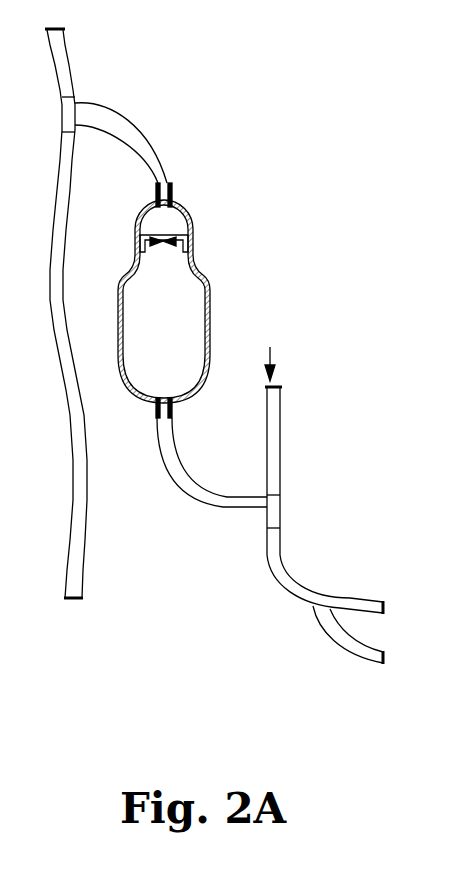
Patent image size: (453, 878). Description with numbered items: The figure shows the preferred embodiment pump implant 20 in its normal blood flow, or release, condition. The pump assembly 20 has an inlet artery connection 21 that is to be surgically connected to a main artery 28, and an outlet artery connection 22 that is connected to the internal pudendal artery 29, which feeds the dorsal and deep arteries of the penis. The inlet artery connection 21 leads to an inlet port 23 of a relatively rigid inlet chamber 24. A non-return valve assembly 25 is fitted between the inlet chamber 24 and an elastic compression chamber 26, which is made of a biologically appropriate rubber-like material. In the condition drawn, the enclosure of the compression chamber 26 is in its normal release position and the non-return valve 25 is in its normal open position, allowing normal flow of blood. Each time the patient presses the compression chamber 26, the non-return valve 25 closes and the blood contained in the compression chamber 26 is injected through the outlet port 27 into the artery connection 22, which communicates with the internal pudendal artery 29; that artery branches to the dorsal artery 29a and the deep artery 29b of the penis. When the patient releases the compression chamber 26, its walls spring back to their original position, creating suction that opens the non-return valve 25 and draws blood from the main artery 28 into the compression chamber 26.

The pump implant 20 is at (77, 670).
The inlet artery connection 21 is at (167, 157).
The outlet artery connection 22 is at (198, 482).
The inlet port 23 is at (174, 193).
The inlet chamber 24 is at (165, 238).
The non-return valve 25 is at (186, 246).
The compression chamber 26 is at (210, 293).
The outlet port 27 is at (173, 428).
The main artery 28 is at (73, 56).
The internal pudendal artery 29 is at (281, 417).
The dorsal artery 29a is at (360, 600).
The deep artery 29b is at (340, 648).